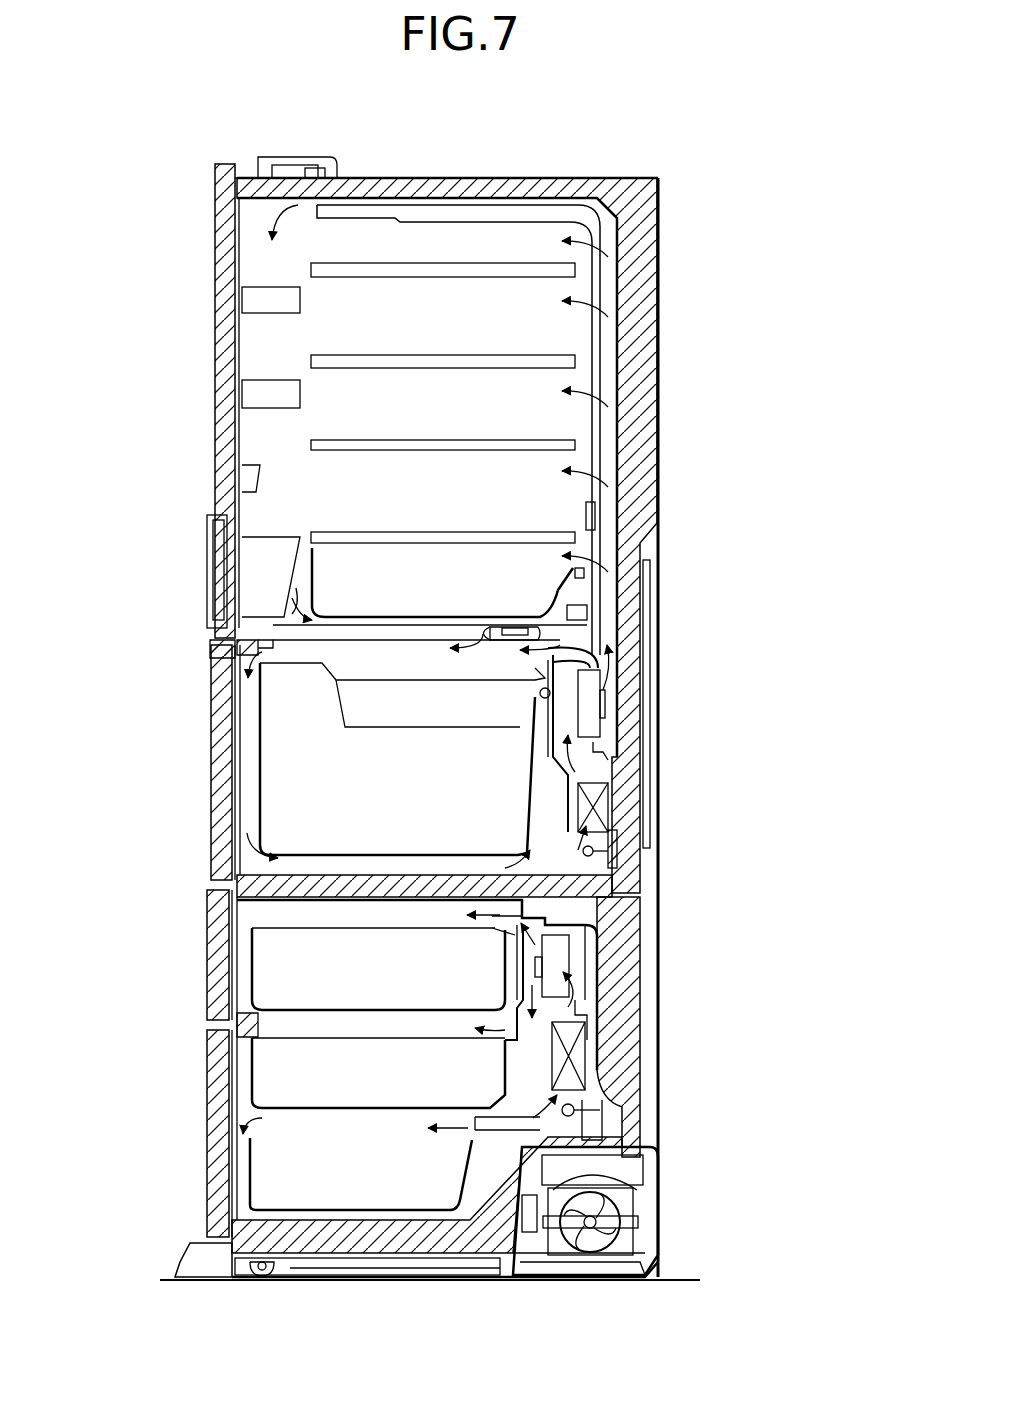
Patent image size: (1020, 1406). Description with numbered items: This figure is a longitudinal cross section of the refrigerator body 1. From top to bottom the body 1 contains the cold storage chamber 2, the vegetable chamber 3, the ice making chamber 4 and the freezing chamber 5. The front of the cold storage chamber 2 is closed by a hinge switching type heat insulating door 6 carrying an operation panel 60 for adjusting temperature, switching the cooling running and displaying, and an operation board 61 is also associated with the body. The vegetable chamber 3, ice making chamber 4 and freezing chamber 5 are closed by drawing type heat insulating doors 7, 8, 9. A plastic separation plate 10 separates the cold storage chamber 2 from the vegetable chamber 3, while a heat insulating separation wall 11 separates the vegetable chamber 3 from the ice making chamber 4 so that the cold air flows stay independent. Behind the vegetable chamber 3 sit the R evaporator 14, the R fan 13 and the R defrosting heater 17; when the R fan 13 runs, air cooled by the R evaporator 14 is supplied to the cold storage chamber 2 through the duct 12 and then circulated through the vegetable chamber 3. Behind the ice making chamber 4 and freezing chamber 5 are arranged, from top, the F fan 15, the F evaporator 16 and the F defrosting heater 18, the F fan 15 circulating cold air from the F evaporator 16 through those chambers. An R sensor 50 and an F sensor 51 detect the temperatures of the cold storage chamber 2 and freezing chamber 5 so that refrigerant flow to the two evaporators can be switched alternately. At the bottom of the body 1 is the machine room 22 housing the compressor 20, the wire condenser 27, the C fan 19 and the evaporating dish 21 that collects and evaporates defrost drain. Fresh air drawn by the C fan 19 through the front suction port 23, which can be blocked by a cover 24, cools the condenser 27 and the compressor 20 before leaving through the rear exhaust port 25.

The refrigerator body 1 is at (265, 123).
The cold storage chamber 2 is at (262, 348).
The vegetable chamber 3 is at (262, 680).
The ice making chamber 4 is at (262, 958).
The freezing chamber 5 is at (250, 1092).
The heat insulating door 6 is at (215, 425).
The heat insulating door 7 is at (212, 728).
The heat insulating door 8 is at (212, 993).
The heat insulating door 9 is at (212, 1153).
The plastic separation plate 10 is at (258, 626).
The heat insulating separation wall 11 is at (240, 878).
The duct 12 is at (612, 417).
The R fan 13 is at (592, 700).
The R evaporator 14 is at (600, 810).
The F fan 15 is at (557, 953).
The F evaporator 16 is at (580, 1052).
The R defrosting heater 17 is at (596, 853).
The F defrosting heater 18 is at (577, 1108).
The C fan 19 is at (612, 1230).
The compressor 20 is at (612, 1256).
The evaporating dish 21 is at (632, 1163).
The machine room 22 is at (647, 1200).
The suction port 23 is at (240, 1276).
The cover 24 is at (195, 1262).
The exhaust port 25 is at (657, 1177).
The condenser 27 is at (400, 1266).
The R sensor 50 is at (592, 518).
The F sensor 51 is at (582, 990).
The operation panel 60 is at (207, 538).
The operation board 61 is at (212, 575).